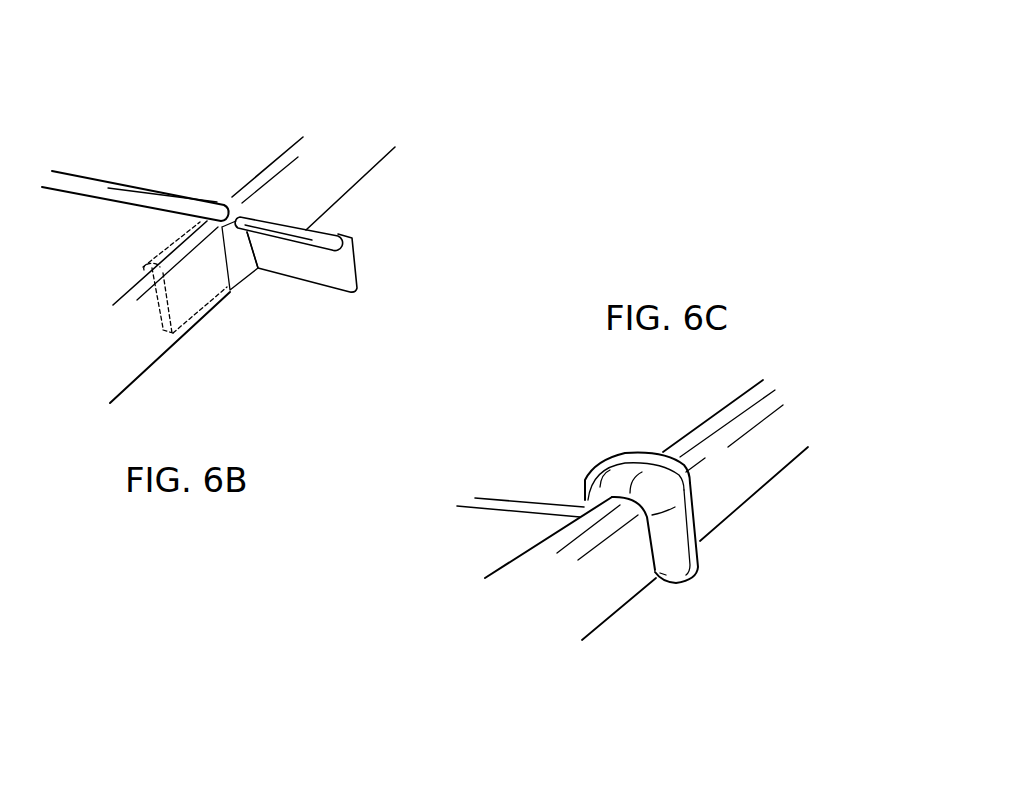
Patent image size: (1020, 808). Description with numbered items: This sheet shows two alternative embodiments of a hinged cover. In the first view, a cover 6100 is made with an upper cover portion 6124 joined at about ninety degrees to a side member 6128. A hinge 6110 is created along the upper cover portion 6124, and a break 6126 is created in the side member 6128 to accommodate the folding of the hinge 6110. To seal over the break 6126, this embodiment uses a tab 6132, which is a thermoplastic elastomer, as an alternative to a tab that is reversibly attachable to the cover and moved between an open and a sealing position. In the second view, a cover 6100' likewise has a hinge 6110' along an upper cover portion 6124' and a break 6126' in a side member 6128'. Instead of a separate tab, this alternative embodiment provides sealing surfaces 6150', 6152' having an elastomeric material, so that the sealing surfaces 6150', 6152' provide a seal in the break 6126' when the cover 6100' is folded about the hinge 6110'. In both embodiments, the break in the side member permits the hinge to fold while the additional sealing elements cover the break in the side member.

In FIG. 6B, the cover 6100 is at (343, 137).
In FIG. 6B, the hinge 6110 is at (135, 124).
In FIG. 6B, the upper cover portion 6124 is at (146, 222).
In FIG. 6B, the side member 6128 is at (291, 275).
In FIG. 6B, the break 6126 is at (203, 322).
In FIG. 6B, the tab 6132 is at (326, 288).
In FIG. 6C, the cover 6100' is at (782, 545).
In FIG. 6C, the hinge 6110' is at (504, 445).
In FIG. 6C, the upper cover portion 6124' is at (604, 479).
In FIG. 6C, the side member 6128' is at (675, 543).
In FIG. 6C, the break 6126' is at (697, 567).
In FIG. 6C, the sealing surface 6150' is at (746, 554).
In FIG. 6C, the sealing surface 6152' is at (638, 634).